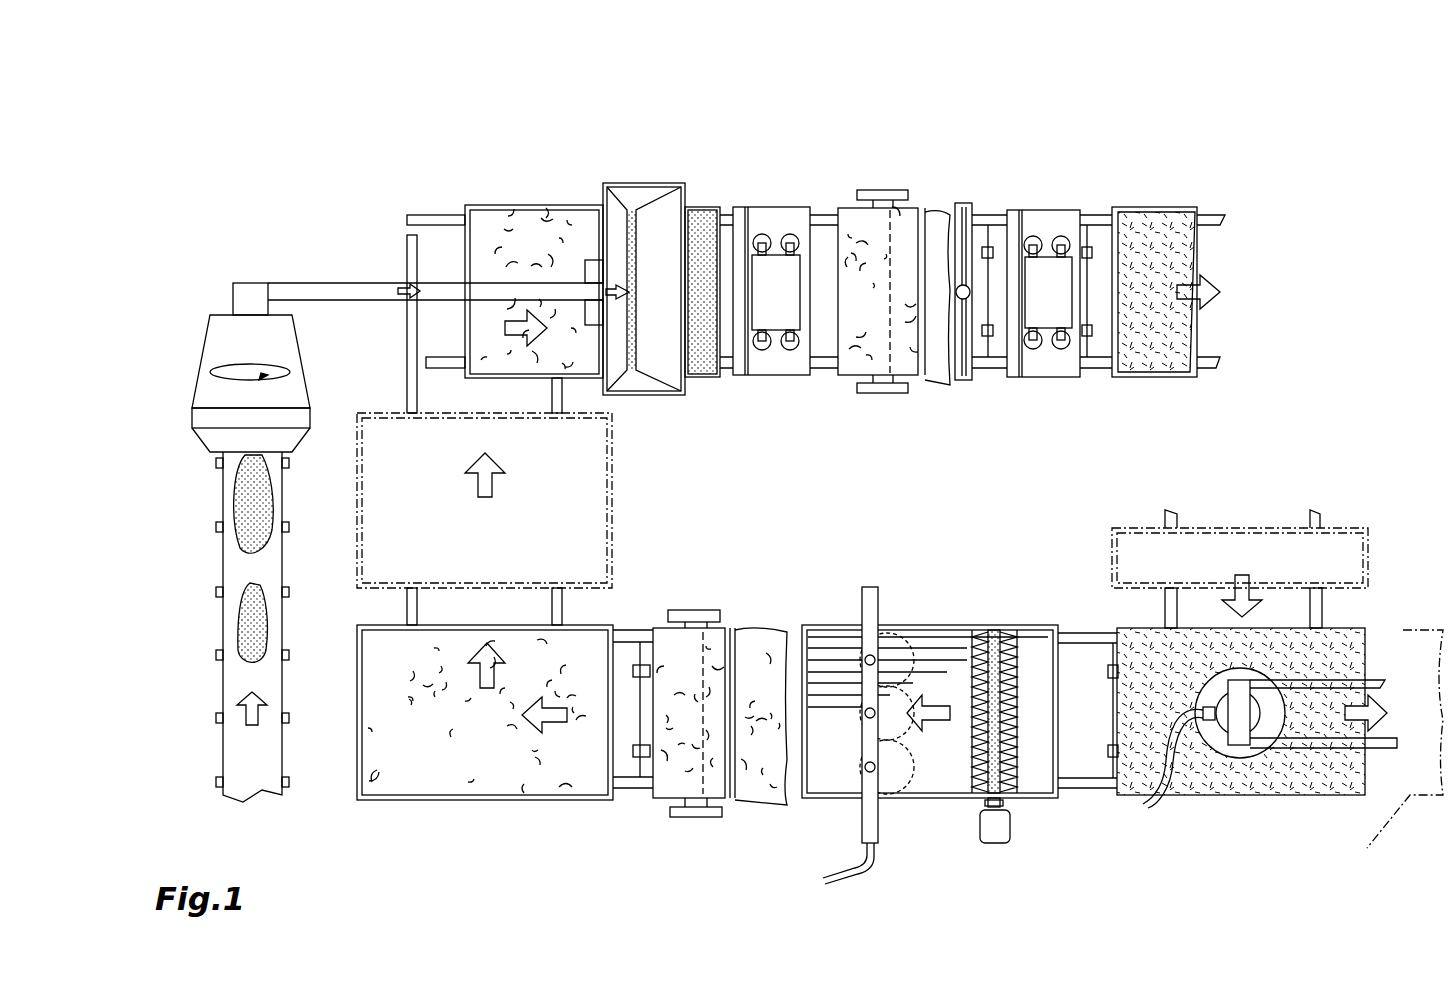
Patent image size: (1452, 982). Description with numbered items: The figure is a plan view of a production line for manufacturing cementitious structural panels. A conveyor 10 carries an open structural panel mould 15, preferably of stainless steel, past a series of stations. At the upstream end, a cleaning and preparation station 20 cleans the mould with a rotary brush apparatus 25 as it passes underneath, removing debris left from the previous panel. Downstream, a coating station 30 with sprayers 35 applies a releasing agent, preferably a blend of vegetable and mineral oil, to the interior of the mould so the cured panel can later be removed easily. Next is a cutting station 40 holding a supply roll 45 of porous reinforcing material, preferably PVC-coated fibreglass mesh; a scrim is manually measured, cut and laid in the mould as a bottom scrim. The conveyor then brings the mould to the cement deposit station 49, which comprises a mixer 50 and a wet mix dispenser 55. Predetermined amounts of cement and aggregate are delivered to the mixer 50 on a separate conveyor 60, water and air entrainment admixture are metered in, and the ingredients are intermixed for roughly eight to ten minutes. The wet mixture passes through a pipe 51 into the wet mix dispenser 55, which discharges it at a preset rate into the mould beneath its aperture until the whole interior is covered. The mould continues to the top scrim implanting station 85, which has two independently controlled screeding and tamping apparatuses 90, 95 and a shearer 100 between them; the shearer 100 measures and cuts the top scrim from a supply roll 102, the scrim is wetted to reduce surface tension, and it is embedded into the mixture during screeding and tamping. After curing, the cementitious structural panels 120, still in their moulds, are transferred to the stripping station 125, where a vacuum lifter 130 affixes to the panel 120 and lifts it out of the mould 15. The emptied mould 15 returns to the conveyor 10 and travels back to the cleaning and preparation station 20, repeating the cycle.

The conveyor 10 is at (440, 215).
The structural panel mould 15 is at (510, 207).
The cleaning and preparation station 20 is at (973, 816).
The rotary brush apparatus 25 is at (1012, 785).
The coating station 30 is at (895, 812).
The sprayers 35 is at (860, 775).
The cutting station 40 is at (740, 812).
The supply roll 45 is at (665, 795).
The cement deposit station 49 is at (700, 130).
The mixer 50 is at (215, 343).
The pipe 51 is at (330, 285).
The wet mix dispenser 55 is at (630, 200).
The conveyor 60 is at (228, 555).
The top scrim implanting station 85 is at (1075, 130).
The screeding and tamping apparatus 90 is at (790, 215).
The screeding and tamping apparatus 95 is at (1058, 217).
The shearer 100 is at (963, 215).
The supply roll 102 is at (903, 215).
The cementitious structural panel 120 is at (1320, 795).
The stripping station 125 is at (1258, 815).
The vacuum lifter 130 is at (1224, 722).